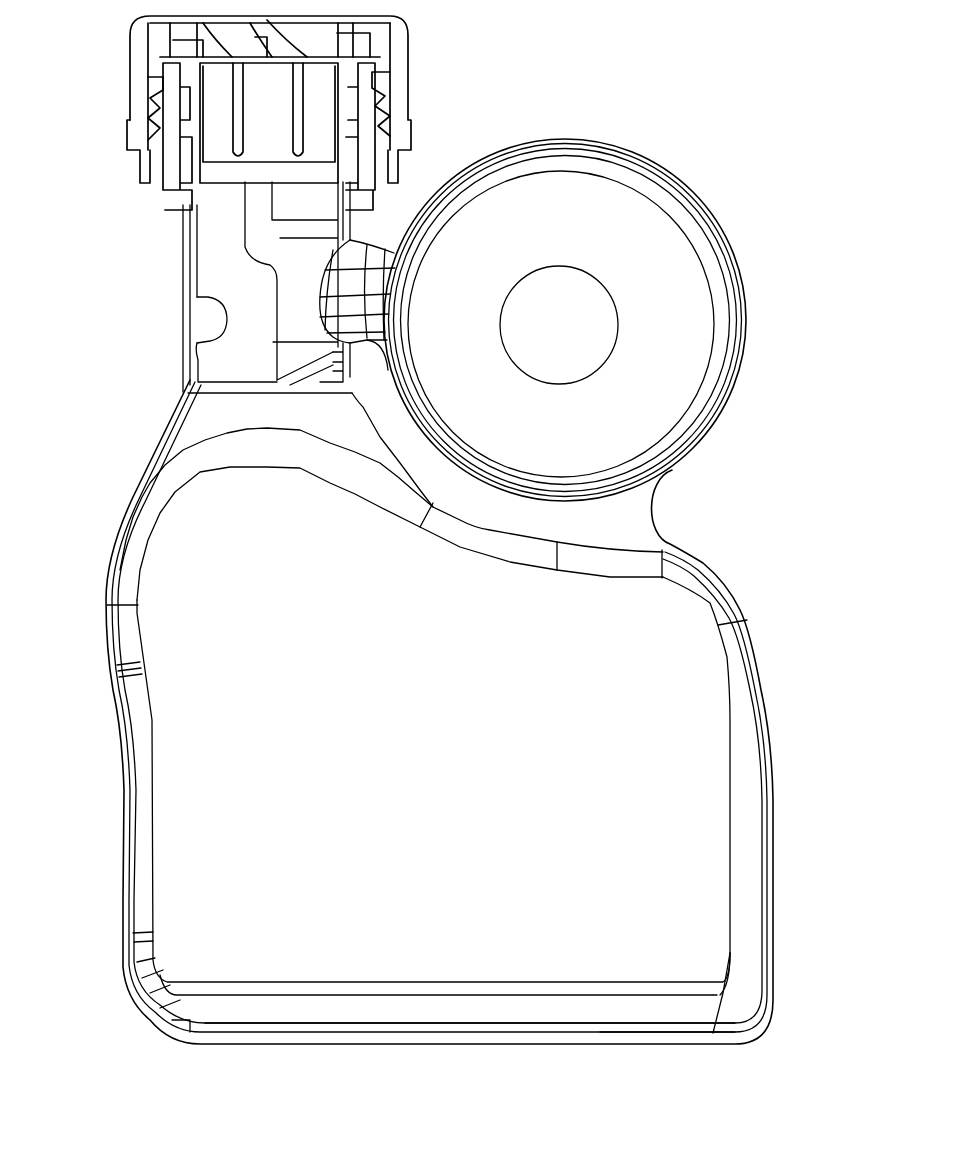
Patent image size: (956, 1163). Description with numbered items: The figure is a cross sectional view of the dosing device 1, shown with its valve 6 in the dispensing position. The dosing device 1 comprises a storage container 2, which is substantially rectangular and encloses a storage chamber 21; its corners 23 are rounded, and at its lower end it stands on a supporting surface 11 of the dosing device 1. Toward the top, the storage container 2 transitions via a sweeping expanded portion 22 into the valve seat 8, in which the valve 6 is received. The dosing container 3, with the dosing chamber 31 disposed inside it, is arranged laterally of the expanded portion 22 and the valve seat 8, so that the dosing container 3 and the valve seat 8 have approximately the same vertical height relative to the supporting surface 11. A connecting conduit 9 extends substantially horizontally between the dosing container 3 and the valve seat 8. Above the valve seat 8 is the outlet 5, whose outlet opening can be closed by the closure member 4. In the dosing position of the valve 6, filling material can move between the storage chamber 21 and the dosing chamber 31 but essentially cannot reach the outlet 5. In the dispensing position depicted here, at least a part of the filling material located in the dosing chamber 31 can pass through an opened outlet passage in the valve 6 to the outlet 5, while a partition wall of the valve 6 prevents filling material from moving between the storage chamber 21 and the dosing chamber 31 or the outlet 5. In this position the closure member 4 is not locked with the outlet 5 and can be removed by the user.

The dosing device 1 is at (592, 93).
The storage container 2 is at (743, 618).
The dosing container 3 is at (713, 210).
The dosing chamber 31 is at (590, 215).
The closure member 4 is at (407, 53).
The outlet 5 is at (167, 122).
The valve 6 is at (217, 227).
The valve seat 8 is at (200, 332).
The connecting conduit 9 is at (370, 257).
The supporting surface 11 is at (372, 1042).
The storage chamber 21 is at (662, 610).
The expanded portion 22 is at (198, 472).
The corners 23 is at (726, 1043).